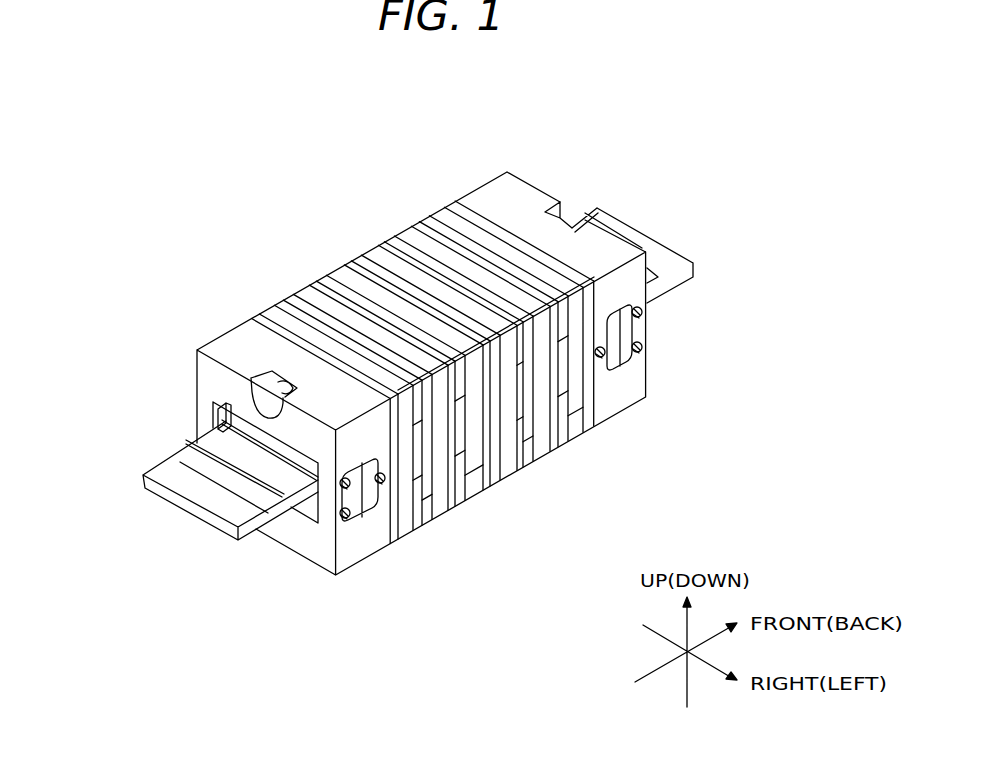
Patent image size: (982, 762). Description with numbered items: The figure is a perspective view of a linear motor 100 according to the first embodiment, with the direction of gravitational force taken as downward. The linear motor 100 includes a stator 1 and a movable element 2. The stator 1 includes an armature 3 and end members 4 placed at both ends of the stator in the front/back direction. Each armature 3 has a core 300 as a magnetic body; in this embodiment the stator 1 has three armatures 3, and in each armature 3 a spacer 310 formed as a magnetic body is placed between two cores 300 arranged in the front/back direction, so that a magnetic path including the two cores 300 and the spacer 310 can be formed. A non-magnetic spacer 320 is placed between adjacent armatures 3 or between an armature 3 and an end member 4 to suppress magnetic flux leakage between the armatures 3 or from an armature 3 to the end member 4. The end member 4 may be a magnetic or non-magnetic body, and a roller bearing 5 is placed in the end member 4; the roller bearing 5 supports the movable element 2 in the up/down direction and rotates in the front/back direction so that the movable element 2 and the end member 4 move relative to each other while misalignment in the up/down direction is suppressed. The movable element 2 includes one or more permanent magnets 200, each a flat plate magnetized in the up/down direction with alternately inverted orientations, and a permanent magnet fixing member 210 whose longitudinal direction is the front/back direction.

The stator 1 is at (523, 180).
The movable element 2 is at (142, 474).
The armature 3 is at (163, 217).
The end member 4 is at (490, 198).
The roller bearing 5 is at (212, 406).
The linear motor 100 is at (455, 666).
The permanent magnet 200 is at (218, 479).
The permanent magnet fixing member 210 is at (267, 522).
The core 300 is at (303, 289).
The spacer 310 is at (353, 262).
The non-magnetic spacer 320 is at (450, 205).